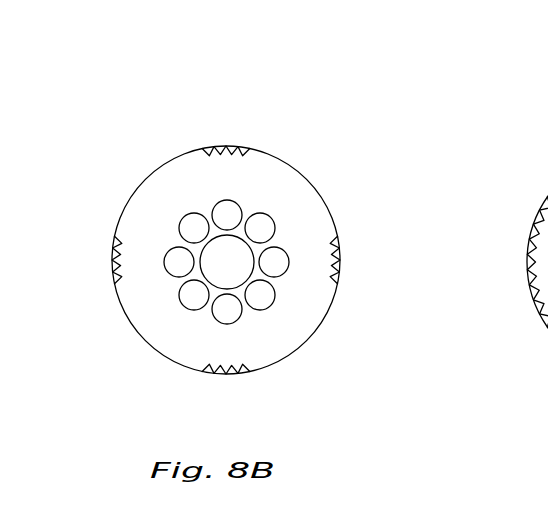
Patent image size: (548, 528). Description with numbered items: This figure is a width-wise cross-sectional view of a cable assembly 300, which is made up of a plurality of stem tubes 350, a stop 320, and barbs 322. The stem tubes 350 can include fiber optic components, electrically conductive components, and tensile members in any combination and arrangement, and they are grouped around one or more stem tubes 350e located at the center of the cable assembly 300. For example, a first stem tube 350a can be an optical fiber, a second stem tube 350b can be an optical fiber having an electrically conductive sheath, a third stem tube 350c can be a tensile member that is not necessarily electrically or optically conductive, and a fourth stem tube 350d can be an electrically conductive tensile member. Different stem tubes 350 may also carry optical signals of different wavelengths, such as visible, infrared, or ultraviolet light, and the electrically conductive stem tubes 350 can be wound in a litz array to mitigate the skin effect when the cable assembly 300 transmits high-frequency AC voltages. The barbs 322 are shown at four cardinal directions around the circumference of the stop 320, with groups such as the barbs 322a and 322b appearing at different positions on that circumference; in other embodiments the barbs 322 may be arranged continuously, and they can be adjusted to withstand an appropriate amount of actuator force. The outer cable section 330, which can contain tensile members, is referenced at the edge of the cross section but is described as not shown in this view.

The cable assembly 300 is at (330, 78).
The stop 320 is at (166, 188).
The barbs 322 is at (228, 378).
The left teeth group 322a is at (112, 258).
The top teeth group 322b is at (225, 147).
The outer cable section 330 is at (318, 188).
The stem tubes 350 is at (247, 274).
The first stem tube 350a is at (272, 294).
The second stem tube 350b is at (282, 266).
The third stem tube 350c is at (276, 224).
The fourth stem tube 350d is at (188, 298).
The center stem tube 350e is at (252, 262).